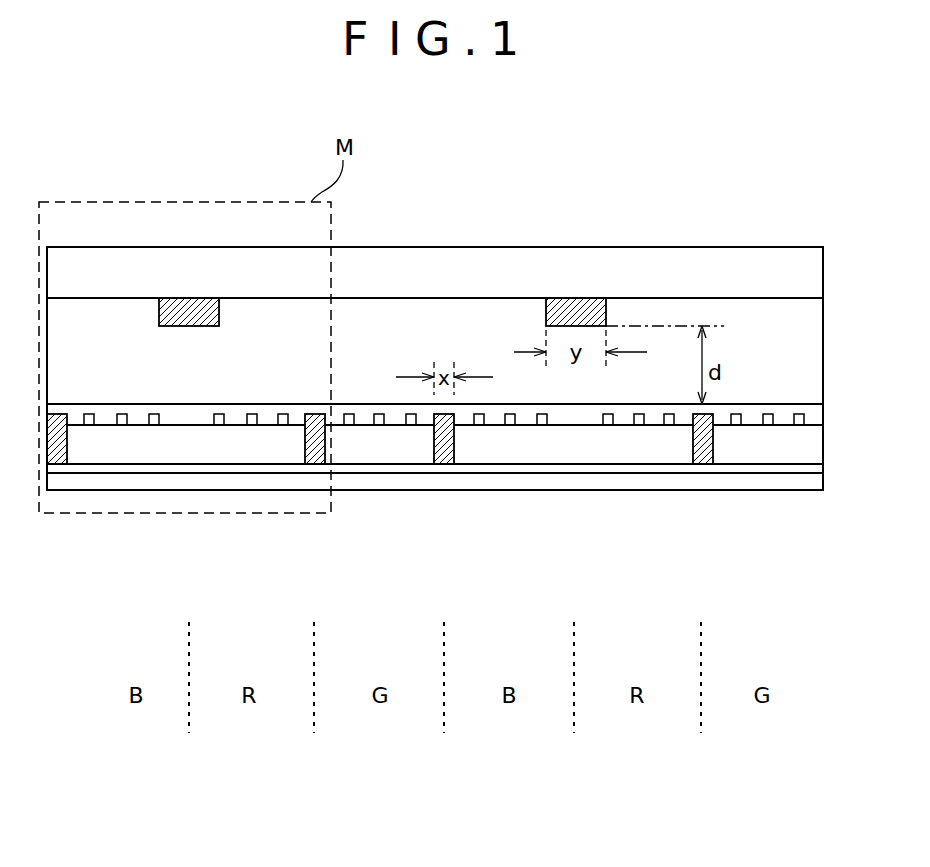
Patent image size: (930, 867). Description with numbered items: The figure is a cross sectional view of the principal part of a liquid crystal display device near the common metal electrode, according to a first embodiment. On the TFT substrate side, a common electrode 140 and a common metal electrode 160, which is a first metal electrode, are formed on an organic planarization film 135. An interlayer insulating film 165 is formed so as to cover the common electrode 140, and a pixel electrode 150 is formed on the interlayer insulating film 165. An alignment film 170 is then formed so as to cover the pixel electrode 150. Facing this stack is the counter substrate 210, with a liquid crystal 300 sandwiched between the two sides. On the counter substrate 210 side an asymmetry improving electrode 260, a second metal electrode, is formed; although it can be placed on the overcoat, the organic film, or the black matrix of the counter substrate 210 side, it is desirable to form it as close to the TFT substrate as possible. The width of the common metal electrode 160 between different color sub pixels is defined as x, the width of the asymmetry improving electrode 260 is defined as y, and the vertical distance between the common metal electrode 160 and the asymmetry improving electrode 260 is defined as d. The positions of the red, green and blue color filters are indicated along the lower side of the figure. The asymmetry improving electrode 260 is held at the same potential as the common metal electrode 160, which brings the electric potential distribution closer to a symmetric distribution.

The organic planarization film 135 is at (720, 485).
The common electrode 140 is at (108, 468).
The pixel electrode 150 is at (154, 421).
The common metal electrode 160 is at (57, 450).
The interlayer insulating film 165 is at (757, 448).
The alignment film 170 is at (768, 407).
The counter substrate 210 is at (663, 268).
The asymmetry improving electrode 260 is at (189, 310).
The liquid crystal 300 is at (743, 317).